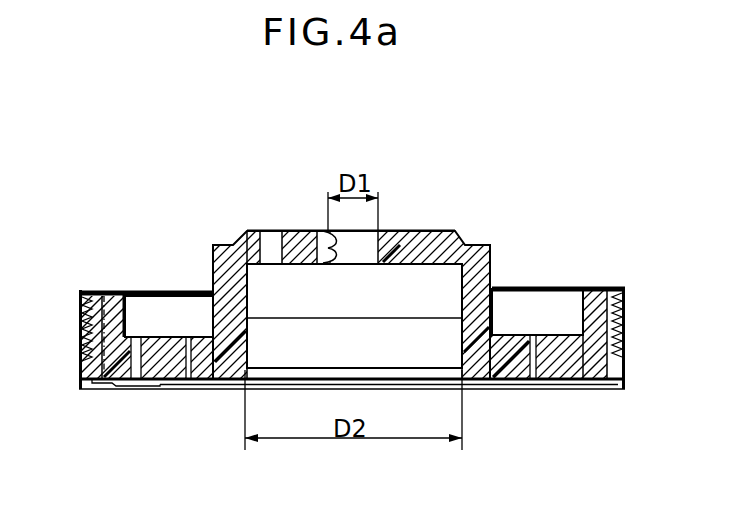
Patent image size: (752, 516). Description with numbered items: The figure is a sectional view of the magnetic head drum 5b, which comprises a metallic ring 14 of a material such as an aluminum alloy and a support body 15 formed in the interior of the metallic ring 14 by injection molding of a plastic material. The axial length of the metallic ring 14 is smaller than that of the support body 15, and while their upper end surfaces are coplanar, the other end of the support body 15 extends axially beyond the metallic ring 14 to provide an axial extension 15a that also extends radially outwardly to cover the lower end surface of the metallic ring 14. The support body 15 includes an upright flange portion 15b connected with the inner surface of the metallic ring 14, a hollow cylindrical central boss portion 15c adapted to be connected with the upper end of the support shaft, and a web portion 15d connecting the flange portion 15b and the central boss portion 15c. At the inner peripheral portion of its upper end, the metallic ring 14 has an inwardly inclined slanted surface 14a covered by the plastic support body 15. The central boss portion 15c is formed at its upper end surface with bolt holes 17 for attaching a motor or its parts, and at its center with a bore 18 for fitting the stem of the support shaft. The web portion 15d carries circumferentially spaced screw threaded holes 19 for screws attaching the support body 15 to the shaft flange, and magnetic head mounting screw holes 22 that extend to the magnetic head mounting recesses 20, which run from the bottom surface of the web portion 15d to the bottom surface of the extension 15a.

The magnetic head drum 5b is at (212, 222).
The metallic ring 14 is at (78, 318).
The slanted surface 14a is at (97, 291).
The support body 15 is at (496, 244).
The axial extension 15a is at (626, 372).
The flange portion 15b is at (592, 289).
The central boss portion 15c is at (412, 232).
The web portion 15d is at (573, 379).
The bolt holes 17 is at (268, 230).
The bore 18 is at (319, 231).
The screw threaded holes 19 is at (189, 379).
The magnetic head mounting recesses 20 is at (120, 380).
The magnetic head mounting screw holes 22 is at (138, 337).